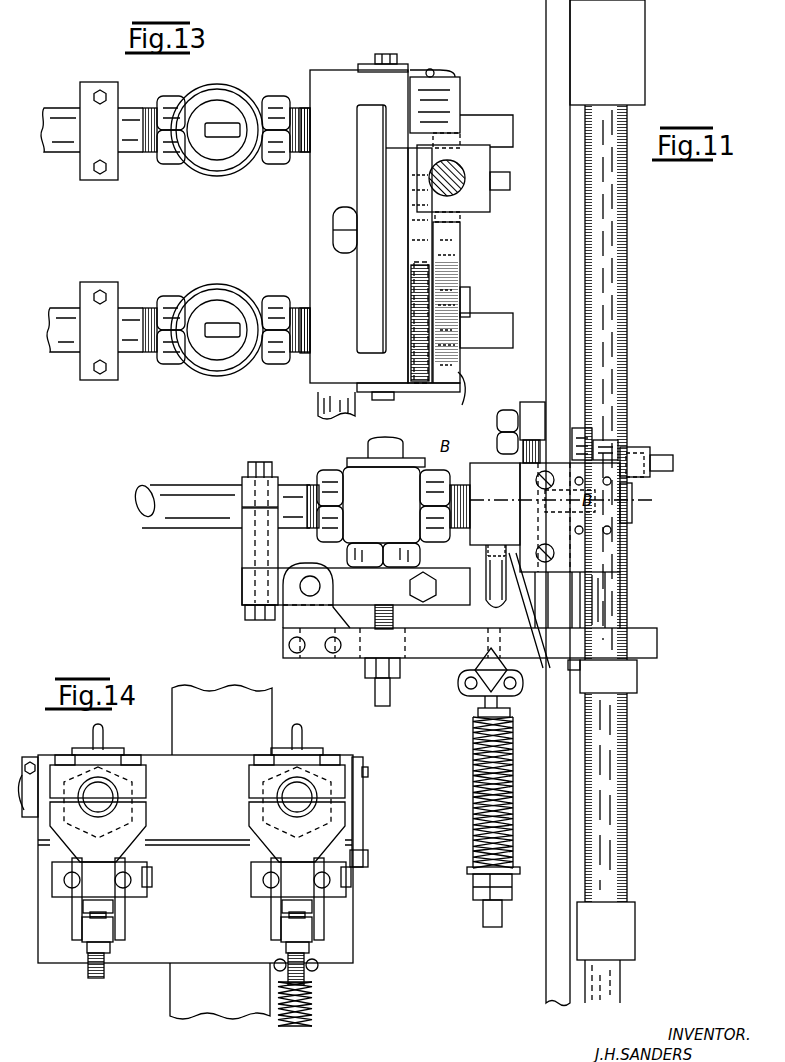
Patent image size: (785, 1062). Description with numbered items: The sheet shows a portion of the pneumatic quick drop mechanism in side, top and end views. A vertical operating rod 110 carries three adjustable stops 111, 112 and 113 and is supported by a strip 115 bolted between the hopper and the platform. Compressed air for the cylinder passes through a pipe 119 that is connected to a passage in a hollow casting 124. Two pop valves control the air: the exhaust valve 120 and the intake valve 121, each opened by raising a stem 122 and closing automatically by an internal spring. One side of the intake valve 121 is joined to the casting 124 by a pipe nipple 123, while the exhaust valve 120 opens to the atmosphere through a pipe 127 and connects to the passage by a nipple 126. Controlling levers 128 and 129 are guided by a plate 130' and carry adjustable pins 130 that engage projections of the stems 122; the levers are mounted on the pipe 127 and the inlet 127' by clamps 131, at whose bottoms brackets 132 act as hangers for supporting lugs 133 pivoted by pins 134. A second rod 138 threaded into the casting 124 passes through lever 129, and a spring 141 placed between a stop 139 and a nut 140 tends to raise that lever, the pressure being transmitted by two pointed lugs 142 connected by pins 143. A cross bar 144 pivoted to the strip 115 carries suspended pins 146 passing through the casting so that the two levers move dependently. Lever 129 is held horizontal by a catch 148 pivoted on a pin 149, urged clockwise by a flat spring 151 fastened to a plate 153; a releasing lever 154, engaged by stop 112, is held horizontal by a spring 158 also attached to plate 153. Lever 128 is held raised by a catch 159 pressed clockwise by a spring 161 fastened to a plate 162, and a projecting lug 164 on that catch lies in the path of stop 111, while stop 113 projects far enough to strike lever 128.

In FIG. 13, the operating rod 110 is at (455, 190).
In FIG. 11, the operating rod 110 is at (622, 297).
In FIG. 13, the stop 111 is at (487, 160).
In FIG. 11, the stop 111 is at (640, 456).
In FIG. 11, the stop 112 is at (630, 695).
In FIG. 11, the stop 113 is at (623, 940).
In FIG. 13, the strip 115 is at (395, 223).
In FIG. 11, the strip 115 is at (553, 281).
In FIG. 14, the strip 115 is at (222, 720).
In FIG. 13, the pipe 119 is at (355, 410).
In FIG. 14, the pipe 119 is at (22, 790).
In FIG. 13, the exhaust valve 120 is at (241, 176).
In FIG. 13, the intake valve 121 is at (228, 368).
In FIG. 11, the intake valve 121 is at (393, 517).
In FIG. 13, the valve stem 122 is at (218, 137).
In FIG. 11, the valve stem 122 is at (375, 456).
In FIG. 14, the valve stem 122 is at (103, 738).
In FIG. 13, the pipe nipple 123 is at (298, 357).
In FIG. 13, the casting 124 is at (310, 218).
In FIG. 11, the casting 124 is at (473, 536).
In FIG. 13, the nipple 126 is at (297, 108).
In FIG. 13, the pipe 127 is at (57, 148).
In FIG. 11, the pipe 127 is at (225, 522).
In FIG. 14, the pipe 127 is at (345, 797).
In FIG. 13, the inlet 127' is at (58, 315).
In FIG. 14, the inlet 127' is at (137, 791).
In FIG. 13, the controlling lever 128 is at (495, 128).
In FIG. 14, the controlling lever 128 is at (104, 928).
In FIG. 13, the controlling lever 129 is at (497, 346).
In FIG. 11, the controlling lever 129 is at (652, 647).
In FIG. 14, the controlling lever 129 is at (313, 944).
In FIG. 11, the adjustable pin 130 is at (468, 629).
In FIG. 14, the adjustable pin 130 is at (239, 942).
In FIG. 14, the plate 130' is at (220, 991).
In FIG. 13, the clamp 131 is at (118, 180).
In FIG. 11, the clamp 131 is at (247, 483).
In FIG. 14, the clamp 131 is at (147, 788).
In FIG. 11, the bracket 132 is at (243, 590).
In FIG. 14, the bracket 132 is at (256, 880).
In FIG. 11, the supporting lug 133 is at (292, 607).
In FIG. 14, the supporting lug 133 is at (77, 889).
In FIG. 11, the pin 134 is at (310, 583).
In FIG. 14, the pin 134 is at (135, 863).
In FIG. 11, the rod 138 is at (486, 584).
In FIG. 11, the stop 139 is at (476, 745).
In FIG. 14, the stop 139 is at (318, 1002).
In FIG. 11, the nut 140 is at (480, 886).
In FIG. 11, the spring 141 is at (474, 830).
In FIG. 14, the spring 141 is at (313, 1001).
In FIG. 11, the pointed lug 142 is at (478, 698).
In FIG. 11, the pin 143 is at (462, 686).
In FIG. 13, the cross bar 144 is at (365, 183).
In FIG. 11, the cross bar 144 is at (530, 405).
In FIG. 11, the suspended pin 146 is at (518, 462).
In FIG. 13, the catch 148 is at (423, 275).
In FIG. 11, the catch 148 is at (583, 600).
In FIG. 11, the pin 149 is at (634, 497).
In FIG. 13, the flat spring 151 is at (418, 358).
In FIG. 11, the flat spring 151 is at (583, 432).
In FIG. 13, the plate 153 is at (437, 386).
In FIG. 11, the plate 153 is at (610, 556).
In FIG. 14, the plate 153 is at (32, 760).
In FIG. 13, the lever 154 is at (460, 268).
In FIG. 13, the spring 158 is at (470, 392).
In FIG. 11, the spring 158 is at (613, 437).
In FIG. 13, the catch 159 is at (420, 100).
In FIG. 11, the catch 159 is at (570, 672).
In FIG. 13, the spring 161 is at (437, 75).
In FIG. 13, the plate 162 is at (407, 70).
In FIG. 14, the plate 162 is at (362, 832).
In FIG. 13, the projecting lug 164 is at (465, 136).